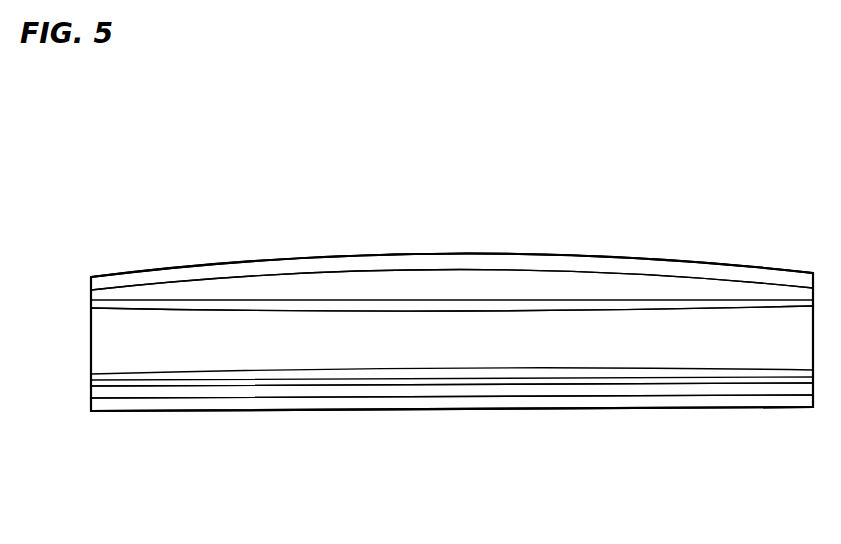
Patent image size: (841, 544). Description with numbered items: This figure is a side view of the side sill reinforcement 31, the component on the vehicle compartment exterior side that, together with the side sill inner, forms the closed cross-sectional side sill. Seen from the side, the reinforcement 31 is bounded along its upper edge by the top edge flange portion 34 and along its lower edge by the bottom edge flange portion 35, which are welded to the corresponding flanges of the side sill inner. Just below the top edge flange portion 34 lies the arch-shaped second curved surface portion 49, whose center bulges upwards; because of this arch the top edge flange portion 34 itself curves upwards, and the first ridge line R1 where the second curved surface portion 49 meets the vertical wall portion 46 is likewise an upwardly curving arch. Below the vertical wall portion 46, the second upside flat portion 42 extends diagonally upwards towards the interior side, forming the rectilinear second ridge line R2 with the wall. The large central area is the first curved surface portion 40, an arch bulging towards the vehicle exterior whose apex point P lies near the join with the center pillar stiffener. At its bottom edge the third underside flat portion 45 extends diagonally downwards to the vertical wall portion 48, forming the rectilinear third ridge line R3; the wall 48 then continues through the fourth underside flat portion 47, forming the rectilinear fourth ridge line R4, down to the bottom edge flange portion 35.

The side sill reinforcement 31 is at (455, 196).
The top edge flange portion 34 is at (243, 268).
The second curved surface portion 49 is at (372, 268).
The first ridge line R1 is at (452, 265).
The second upside flat portion 42 is at (485, 305).
The vertical wall portion 46 is at (586, 288).
The second ridge line R2 is at (693, 297).
The first curved surface portion 40 is at (487, 353).
The apex point P is at (433, 352).
The third underside flat portion 45 is at (462, 375).
The vertical wall portion 48 is at (557, 382).
The fourth underside flat portion 47 is at (635, 390).
The bottom edge flange portion 35 is at (765, 400).
The third ridge line R3 is at (243, 387).
The fourth ridge line R4 is at (308, 398).